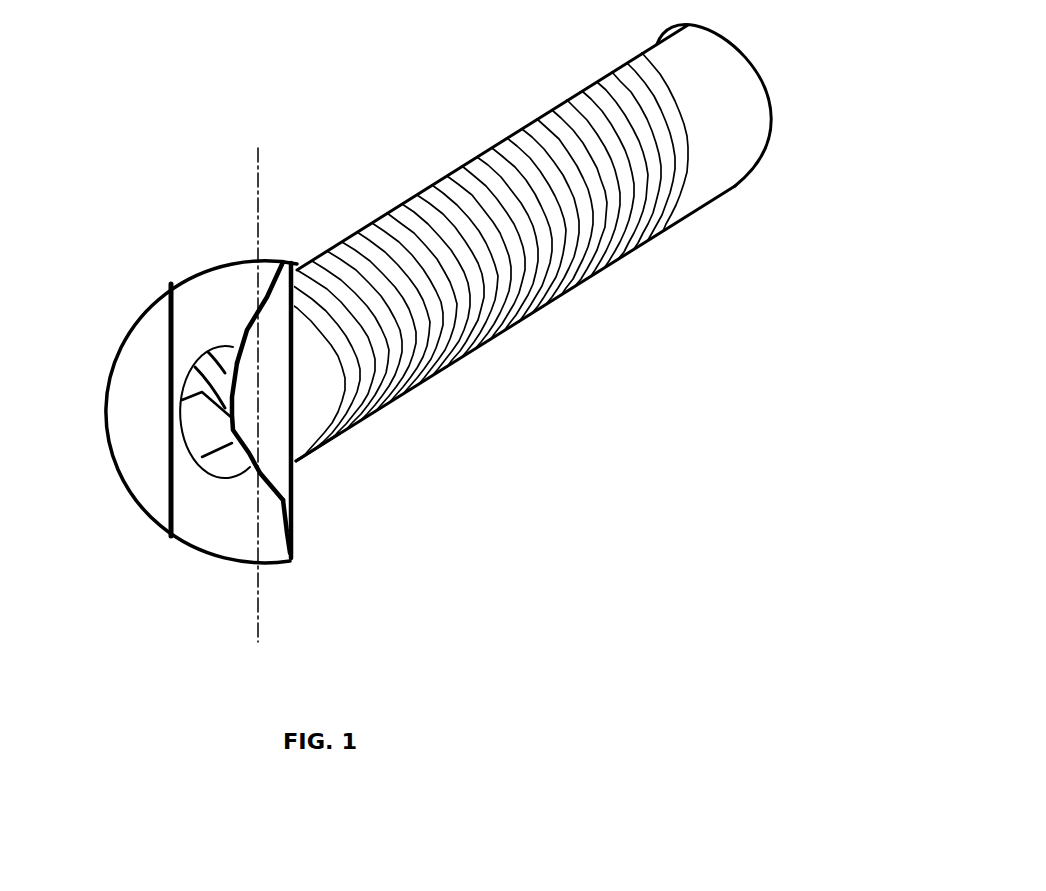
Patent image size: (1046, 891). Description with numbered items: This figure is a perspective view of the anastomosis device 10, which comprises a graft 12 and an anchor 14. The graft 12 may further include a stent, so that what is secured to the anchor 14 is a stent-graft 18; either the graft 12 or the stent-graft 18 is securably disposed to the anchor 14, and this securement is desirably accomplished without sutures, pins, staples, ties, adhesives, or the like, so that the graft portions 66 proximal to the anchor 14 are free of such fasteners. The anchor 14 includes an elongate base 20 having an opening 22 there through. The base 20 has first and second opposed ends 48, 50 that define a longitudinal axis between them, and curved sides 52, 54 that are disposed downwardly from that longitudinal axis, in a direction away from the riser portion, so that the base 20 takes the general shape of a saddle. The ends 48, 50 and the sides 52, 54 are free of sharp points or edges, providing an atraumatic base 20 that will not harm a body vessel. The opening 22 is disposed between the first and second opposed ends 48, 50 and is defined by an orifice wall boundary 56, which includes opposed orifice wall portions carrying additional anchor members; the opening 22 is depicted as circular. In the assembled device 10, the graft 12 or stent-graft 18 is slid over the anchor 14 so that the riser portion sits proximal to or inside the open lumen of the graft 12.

The anastomosis device 10 is at (399, 122).
The graft 12 is at (527, 320).
The anchor 14 is at (183, 287).
The stent-graft 18 is at (602, 278).
The base 20 is at (227, 533).
The opening 22 is at (226, 342).
The first end 48 is at (280, 260).
The second end 50 is at (297, 557).
The curved side 52 is at (262, 428).
The curved side 54 is at (123, 412).
The orifice wall boundary 56 is at (217, 473).
The graft portions 66 is at (338, 438).